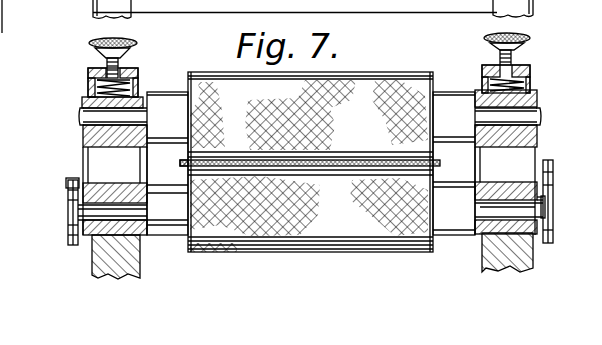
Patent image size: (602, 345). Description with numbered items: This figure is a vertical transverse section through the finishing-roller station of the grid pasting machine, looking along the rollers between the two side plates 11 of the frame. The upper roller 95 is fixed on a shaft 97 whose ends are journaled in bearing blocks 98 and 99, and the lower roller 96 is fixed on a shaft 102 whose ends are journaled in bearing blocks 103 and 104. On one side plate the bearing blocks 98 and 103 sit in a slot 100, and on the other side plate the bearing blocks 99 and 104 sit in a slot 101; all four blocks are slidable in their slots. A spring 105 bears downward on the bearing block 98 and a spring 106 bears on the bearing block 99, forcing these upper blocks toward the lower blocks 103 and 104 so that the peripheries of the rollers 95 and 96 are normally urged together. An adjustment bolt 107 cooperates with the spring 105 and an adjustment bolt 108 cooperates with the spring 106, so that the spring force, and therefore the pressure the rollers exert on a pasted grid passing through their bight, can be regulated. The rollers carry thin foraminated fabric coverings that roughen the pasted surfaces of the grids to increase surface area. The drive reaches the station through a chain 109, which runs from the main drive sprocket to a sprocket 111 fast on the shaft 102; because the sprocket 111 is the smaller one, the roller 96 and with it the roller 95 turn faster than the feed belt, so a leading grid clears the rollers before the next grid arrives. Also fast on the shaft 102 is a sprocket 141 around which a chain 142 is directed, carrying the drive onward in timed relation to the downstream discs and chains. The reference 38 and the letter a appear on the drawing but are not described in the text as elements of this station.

The side plates 11 is at (0, 232).
The frame member 38 is at (8, 37).
The roller 95 is at (382, 78).
The roller 96 is at (392, 243).
The shaft 97 is at (473, 142).
The bearing block 98 is at (485, 182).
The bearing block 99 is at (127, 138).
The slot 100 is at (502, 175).
The slot 101 is at (100, 160).
The shaft 102 is at (488, 204).
The bearing block 103 is at (490, 236).
The bearing block 104 is at (147, 226).
The spring 105 is at (488, 82).
The spring 106 is at (133, 85).
The adjustment bolt 107 is at (520, 62).
The adjustment bolt 108 is at (118, 57).
The chain 109 is at (550, 160).
The sprocket 111 is at (553, 227).
The sprocket 141 is at (72, 200).
The chain 142 is at (67, 183).
The key a is at (180, 163).